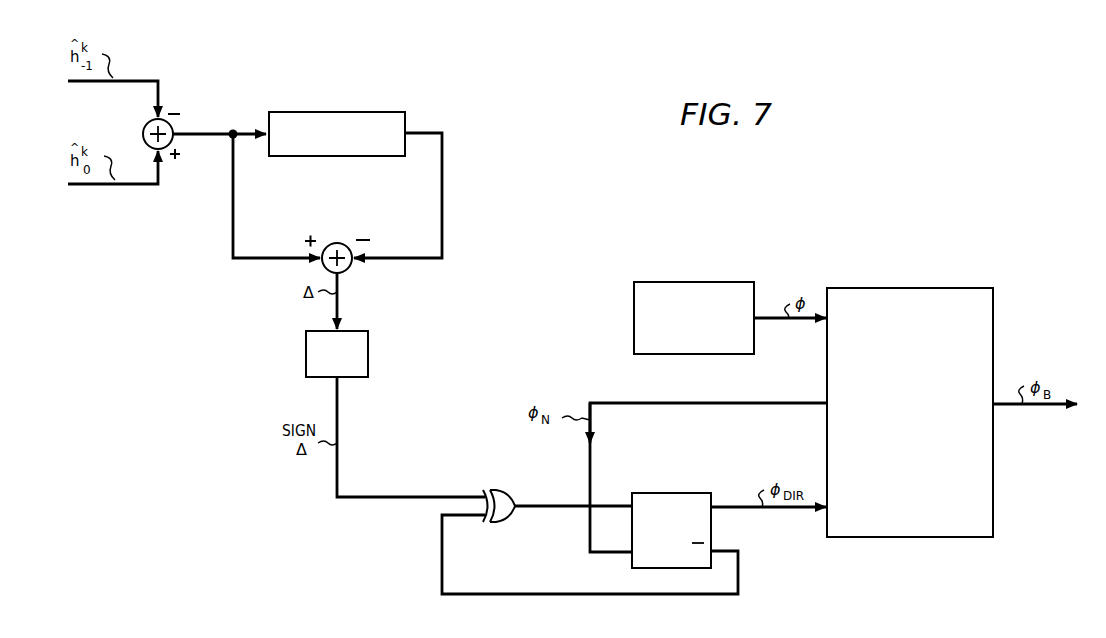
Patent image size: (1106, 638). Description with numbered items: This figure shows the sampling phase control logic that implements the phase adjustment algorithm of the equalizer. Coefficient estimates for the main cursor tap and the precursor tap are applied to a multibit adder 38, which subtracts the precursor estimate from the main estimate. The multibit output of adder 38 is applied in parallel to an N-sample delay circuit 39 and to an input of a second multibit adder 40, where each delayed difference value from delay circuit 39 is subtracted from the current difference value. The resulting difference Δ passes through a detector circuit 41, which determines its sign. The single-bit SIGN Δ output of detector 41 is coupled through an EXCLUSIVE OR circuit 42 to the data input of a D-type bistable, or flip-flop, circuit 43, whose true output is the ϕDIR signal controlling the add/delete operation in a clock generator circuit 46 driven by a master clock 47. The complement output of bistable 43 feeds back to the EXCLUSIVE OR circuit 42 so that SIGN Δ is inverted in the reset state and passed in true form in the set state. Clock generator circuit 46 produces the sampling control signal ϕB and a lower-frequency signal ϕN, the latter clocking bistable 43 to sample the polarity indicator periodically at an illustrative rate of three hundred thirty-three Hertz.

The multibit adder 38 is at (151, 121).
The N-sample delay circuit 39 is at (300, 112).
The multibit adder 40 is at (350, 242).
The detector circuit 41 is at (368, 352).
The EXCLUSIVE OR circuit 42 is at (501, 490).
The D-type bistable (flip-flop) circuit 43 is at (660, 493).
The clock generator circuit 46 is at (855, 288).
The master clock 47 is at (661, 281).